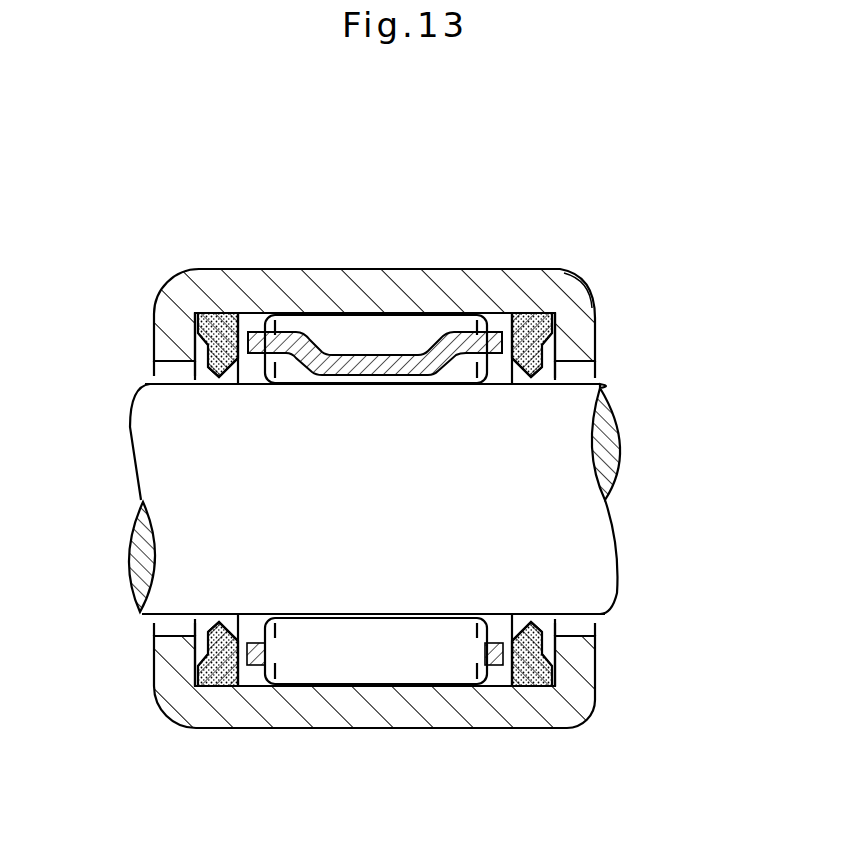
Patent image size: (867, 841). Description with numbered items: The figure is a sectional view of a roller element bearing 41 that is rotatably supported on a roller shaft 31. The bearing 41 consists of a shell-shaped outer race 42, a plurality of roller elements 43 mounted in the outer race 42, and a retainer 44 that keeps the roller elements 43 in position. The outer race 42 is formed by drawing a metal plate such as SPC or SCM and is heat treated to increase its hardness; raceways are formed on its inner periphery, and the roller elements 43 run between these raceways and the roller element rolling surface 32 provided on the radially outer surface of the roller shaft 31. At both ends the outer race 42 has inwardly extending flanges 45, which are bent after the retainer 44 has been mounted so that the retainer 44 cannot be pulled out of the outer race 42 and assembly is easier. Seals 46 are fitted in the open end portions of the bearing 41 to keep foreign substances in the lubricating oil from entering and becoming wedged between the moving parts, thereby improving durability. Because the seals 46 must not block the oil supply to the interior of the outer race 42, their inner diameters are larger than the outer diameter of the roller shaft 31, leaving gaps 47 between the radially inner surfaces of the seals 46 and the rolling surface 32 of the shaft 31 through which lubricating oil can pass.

The roller shaft 31 is at (170, 490).
The roller element rolling surface 32 is at (350, 618).
The roller element bearing 41 is at (168, 280).
The outer race 42 is at (364, 282).
The roller element 43 is at (410, 332).
The retainer 44 is at (367, 385).
The inwardly extending flange 45 is at (163, 343).
The seal 46 is at (218, 320).
The gap 47 is at (220, 380).